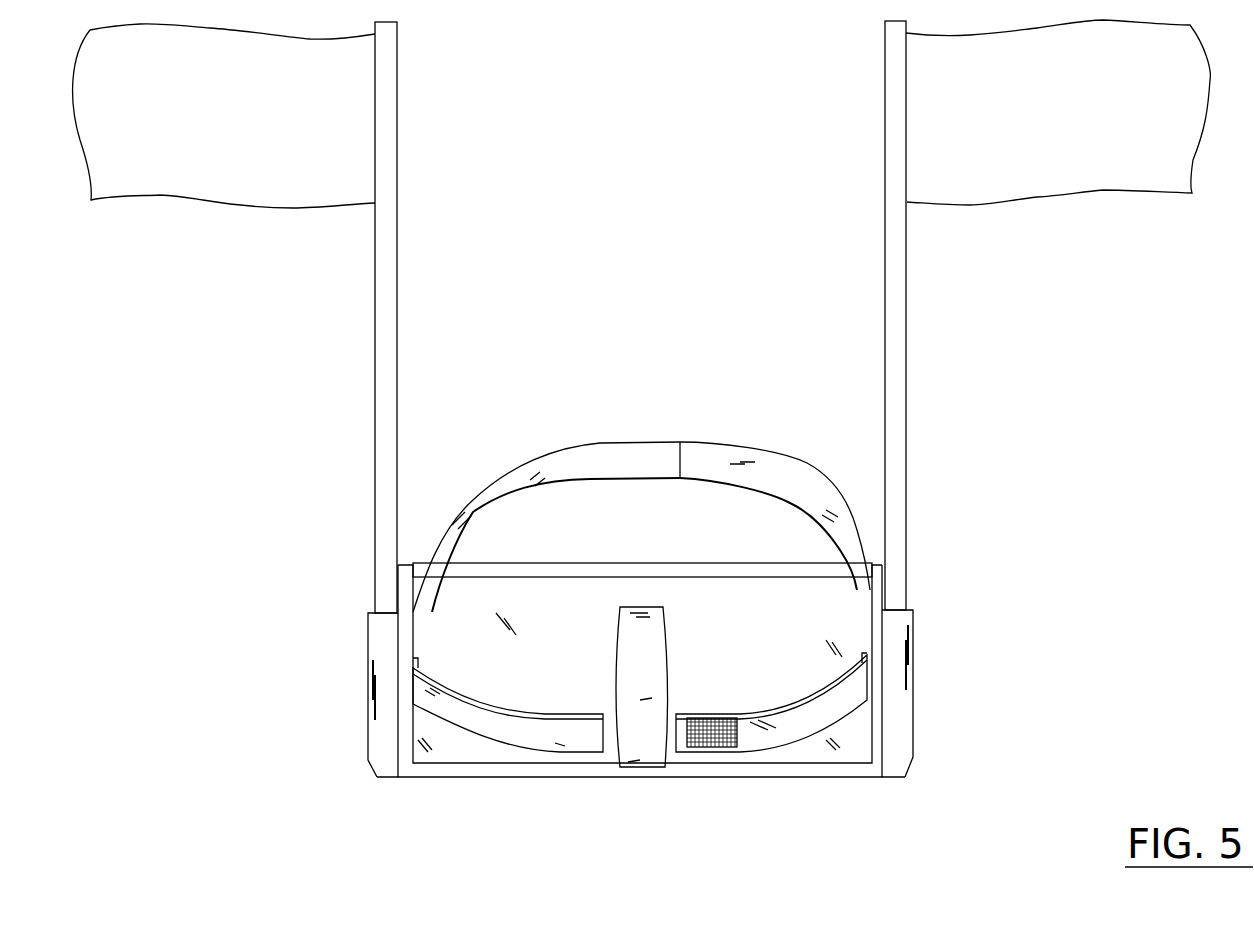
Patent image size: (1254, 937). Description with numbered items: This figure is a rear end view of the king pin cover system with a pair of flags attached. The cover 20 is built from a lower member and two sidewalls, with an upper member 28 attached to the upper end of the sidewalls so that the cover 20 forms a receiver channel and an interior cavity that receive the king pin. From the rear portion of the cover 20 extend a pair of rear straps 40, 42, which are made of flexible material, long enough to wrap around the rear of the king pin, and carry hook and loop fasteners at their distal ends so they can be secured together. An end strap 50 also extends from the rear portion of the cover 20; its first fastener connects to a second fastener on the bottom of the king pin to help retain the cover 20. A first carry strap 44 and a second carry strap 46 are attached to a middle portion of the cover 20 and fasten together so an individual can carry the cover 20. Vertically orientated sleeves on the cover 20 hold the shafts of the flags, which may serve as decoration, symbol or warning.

The cover 20 is at (700, 781).
The upper member 28 is at (730, 560).
The rear strap 40 is at (507, 737).
The rear strap 42 is at (802, 725).
The first carry strap 44 is at (590, 457).
The second carry strap 46 is at (710, 453).
The end strap 50 is at (653, 757).